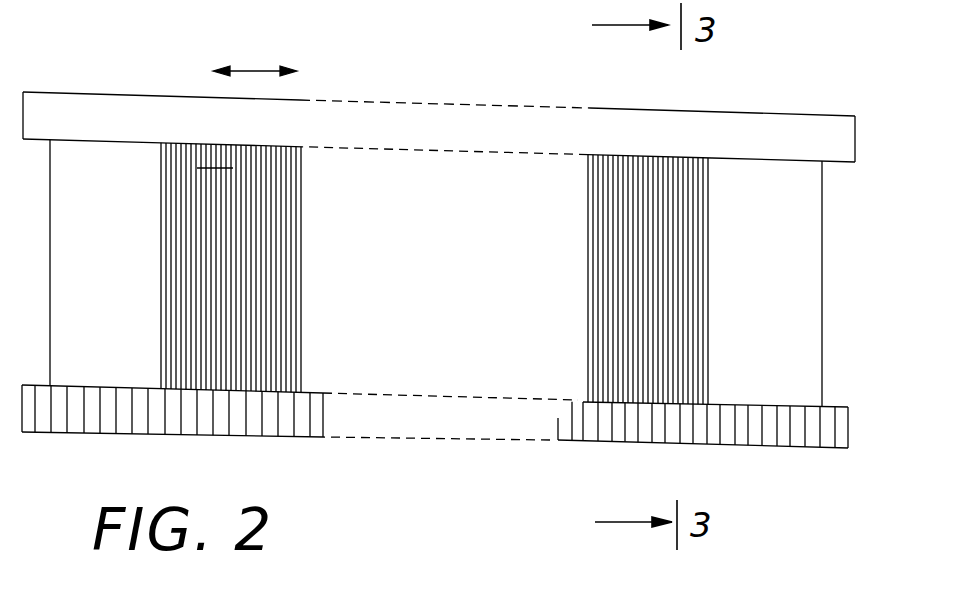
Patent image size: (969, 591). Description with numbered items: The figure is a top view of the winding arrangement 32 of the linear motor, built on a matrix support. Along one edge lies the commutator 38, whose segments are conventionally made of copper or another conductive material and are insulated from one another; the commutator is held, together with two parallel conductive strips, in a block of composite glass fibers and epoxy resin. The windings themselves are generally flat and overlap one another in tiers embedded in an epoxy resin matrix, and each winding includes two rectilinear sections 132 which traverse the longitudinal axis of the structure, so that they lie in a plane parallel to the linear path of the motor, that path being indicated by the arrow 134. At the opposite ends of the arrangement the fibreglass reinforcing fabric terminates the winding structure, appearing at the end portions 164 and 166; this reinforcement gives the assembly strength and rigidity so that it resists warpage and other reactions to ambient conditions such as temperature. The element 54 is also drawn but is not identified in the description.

The connector assembly 32 is at (38, 282).
The top plate 54 is at (103, 108).
The lower surface of top plate 164 is at (115, 157).
The direction of relative movement 134 is at (252, 70).
The contact brush blocks 132 is at (185, 203).
The side wall 166 is at (806, 284).
The base plate 38 is at (262, 424).